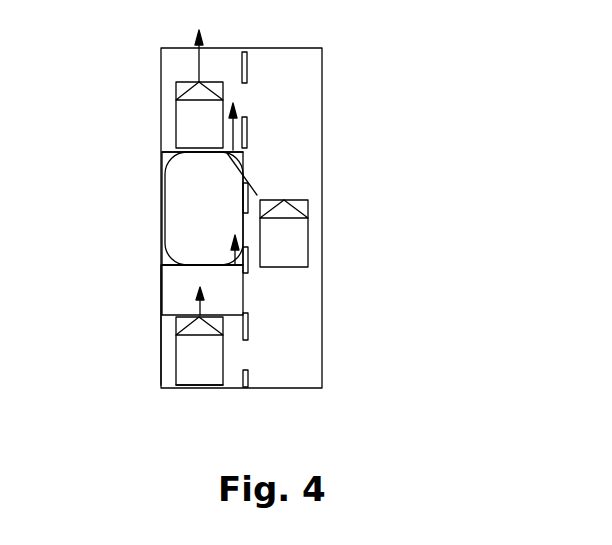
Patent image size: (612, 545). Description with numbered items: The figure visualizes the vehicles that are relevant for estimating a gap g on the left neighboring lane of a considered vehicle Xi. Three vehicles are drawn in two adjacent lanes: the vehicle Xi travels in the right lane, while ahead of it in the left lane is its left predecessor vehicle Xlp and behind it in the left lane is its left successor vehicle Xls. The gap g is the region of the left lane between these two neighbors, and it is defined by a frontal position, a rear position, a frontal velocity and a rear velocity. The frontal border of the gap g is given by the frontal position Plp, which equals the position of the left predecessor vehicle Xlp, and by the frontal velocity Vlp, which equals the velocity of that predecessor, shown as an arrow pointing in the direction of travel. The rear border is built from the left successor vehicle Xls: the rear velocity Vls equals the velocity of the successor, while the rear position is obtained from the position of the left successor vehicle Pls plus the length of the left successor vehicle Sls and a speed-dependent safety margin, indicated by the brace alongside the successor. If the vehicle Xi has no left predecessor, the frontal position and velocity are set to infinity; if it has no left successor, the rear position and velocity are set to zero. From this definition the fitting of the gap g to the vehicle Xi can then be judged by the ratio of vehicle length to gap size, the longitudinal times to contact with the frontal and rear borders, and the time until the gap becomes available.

The frontal velocity Vlp is at (201, 63).
The left predecessor vehicle Xlp is at (199, 115).
The gap g is at (202, 208).
The frontal position Plp is at (188, 152).
The vehicle Xi is at (284, 233).
The rear velocity Vls is at (284, 287).
The length of the left successor vehicle Sls is at (93, 265).
The left successor vehicle Xls is at (199, 351).
The position of the left successor vehicle Pls is at (192, 386).